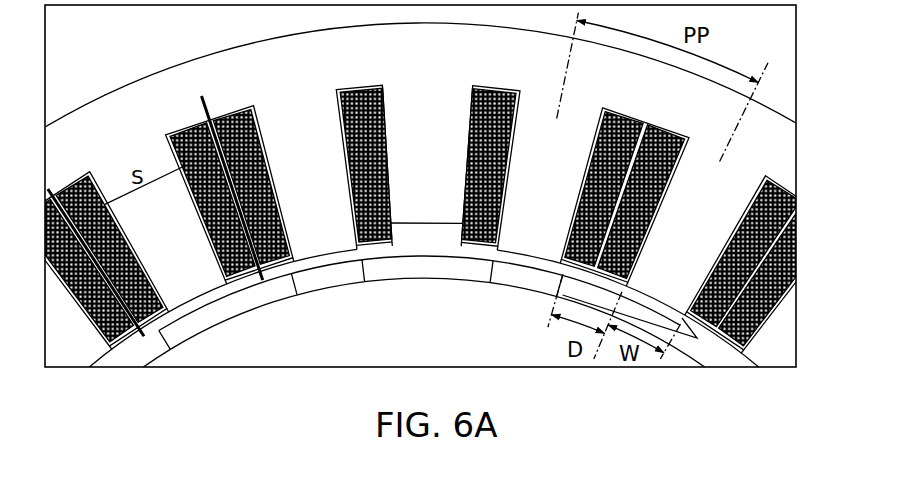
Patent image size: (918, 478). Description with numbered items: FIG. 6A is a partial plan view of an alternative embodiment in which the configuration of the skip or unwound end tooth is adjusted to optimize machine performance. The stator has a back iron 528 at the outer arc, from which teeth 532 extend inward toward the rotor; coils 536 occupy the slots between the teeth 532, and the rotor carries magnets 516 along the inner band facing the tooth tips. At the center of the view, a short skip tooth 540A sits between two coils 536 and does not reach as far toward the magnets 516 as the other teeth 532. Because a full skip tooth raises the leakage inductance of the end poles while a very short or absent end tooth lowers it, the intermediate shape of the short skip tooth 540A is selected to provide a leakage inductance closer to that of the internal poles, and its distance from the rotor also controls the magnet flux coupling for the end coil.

The back iron 528 is at (300, 74).
The magnets 516 is at (205, 312).
The teeth 532 is at (333, 237).
The coils 536 is at (262, 263).
The short skip tooth 540A is at (437, 213).